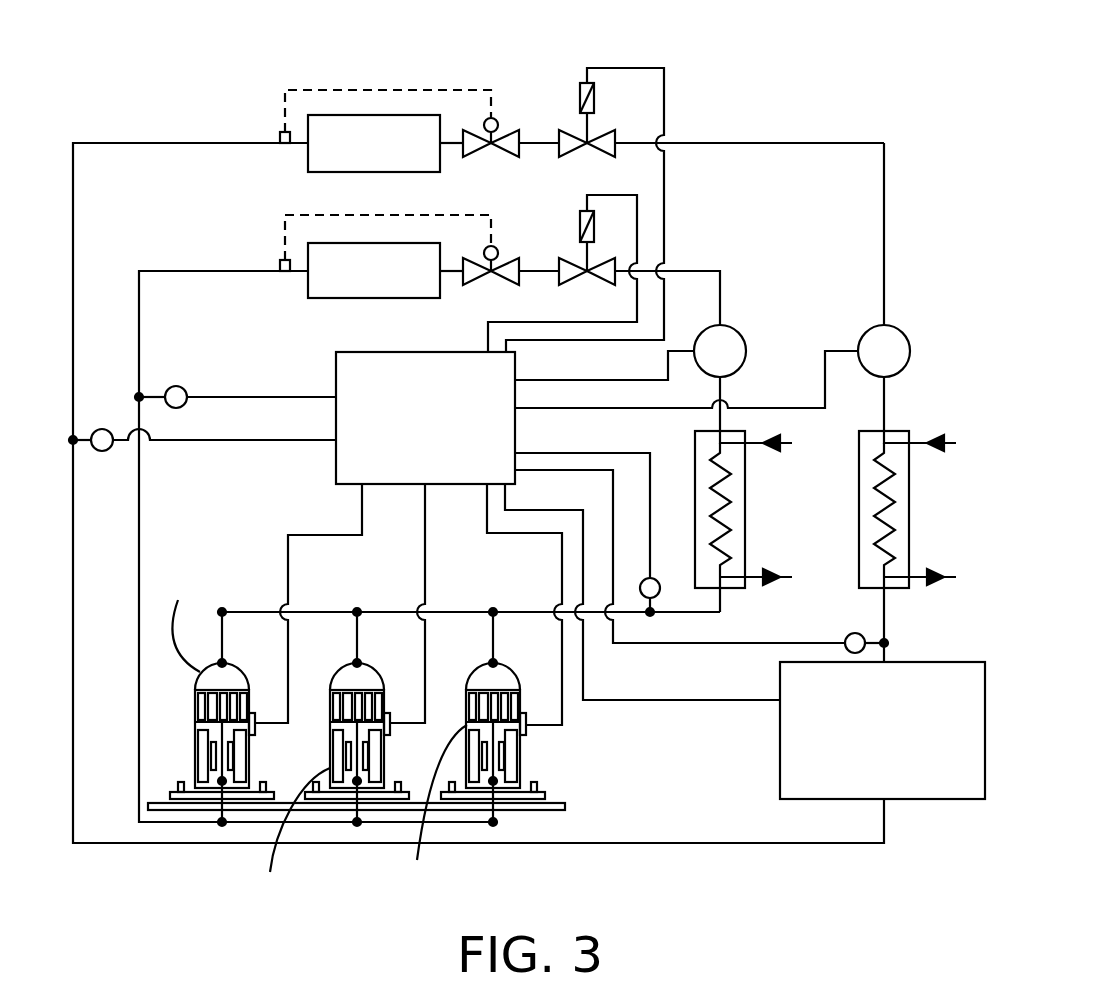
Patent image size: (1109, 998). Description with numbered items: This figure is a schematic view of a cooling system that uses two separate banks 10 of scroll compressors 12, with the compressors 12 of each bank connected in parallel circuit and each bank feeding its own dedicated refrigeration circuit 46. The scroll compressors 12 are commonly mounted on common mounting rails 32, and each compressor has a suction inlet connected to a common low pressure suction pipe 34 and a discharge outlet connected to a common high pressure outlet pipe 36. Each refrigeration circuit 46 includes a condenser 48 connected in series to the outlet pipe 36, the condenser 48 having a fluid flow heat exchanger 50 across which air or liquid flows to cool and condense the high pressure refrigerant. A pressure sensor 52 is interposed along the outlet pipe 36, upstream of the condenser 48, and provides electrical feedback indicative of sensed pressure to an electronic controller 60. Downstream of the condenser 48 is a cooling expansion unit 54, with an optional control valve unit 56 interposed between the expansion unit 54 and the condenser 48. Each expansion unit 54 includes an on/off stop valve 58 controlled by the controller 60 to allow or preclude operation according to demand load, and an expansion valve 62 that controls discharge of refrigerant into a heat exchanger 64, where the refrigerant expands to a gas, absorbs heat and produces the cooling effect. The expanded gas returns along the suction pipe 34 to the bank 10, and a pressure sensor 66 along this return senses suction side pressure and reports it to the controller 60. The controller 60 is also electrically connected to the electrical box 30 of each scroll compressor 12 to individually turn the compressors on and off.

The bank of scroll compressors 10 is at (580, 733).
The scroll compressor 12 is at (195, 750).
The electrical box 30 is at (254, 718).
The common mounting rails 32 is at (565, 805).
The common low pressure suction pipe 34 is at (165, 822).
The common high pressure outlet pipe 36 is at (262, 612).
The refrigeration circuit 46 is at (814, 90).
The condenser 48 is at (745, 490).
The fluid flow heat exchanger 50 is at (725, 530).
The pressure sensor 52 is at (661, 591).
The cooling expansion unit 54 is at (299, 66).
The control valve unit 56 is at (740, 335).
The on/off stop valve 58 is at (576, 158).
The electronic controller 60 is at (336, 457).
The expansion valve 62 is at (505, 130).
The heat exchanger 64 is at (380, 115).
The pressure sensor 66 is at (181, 387).